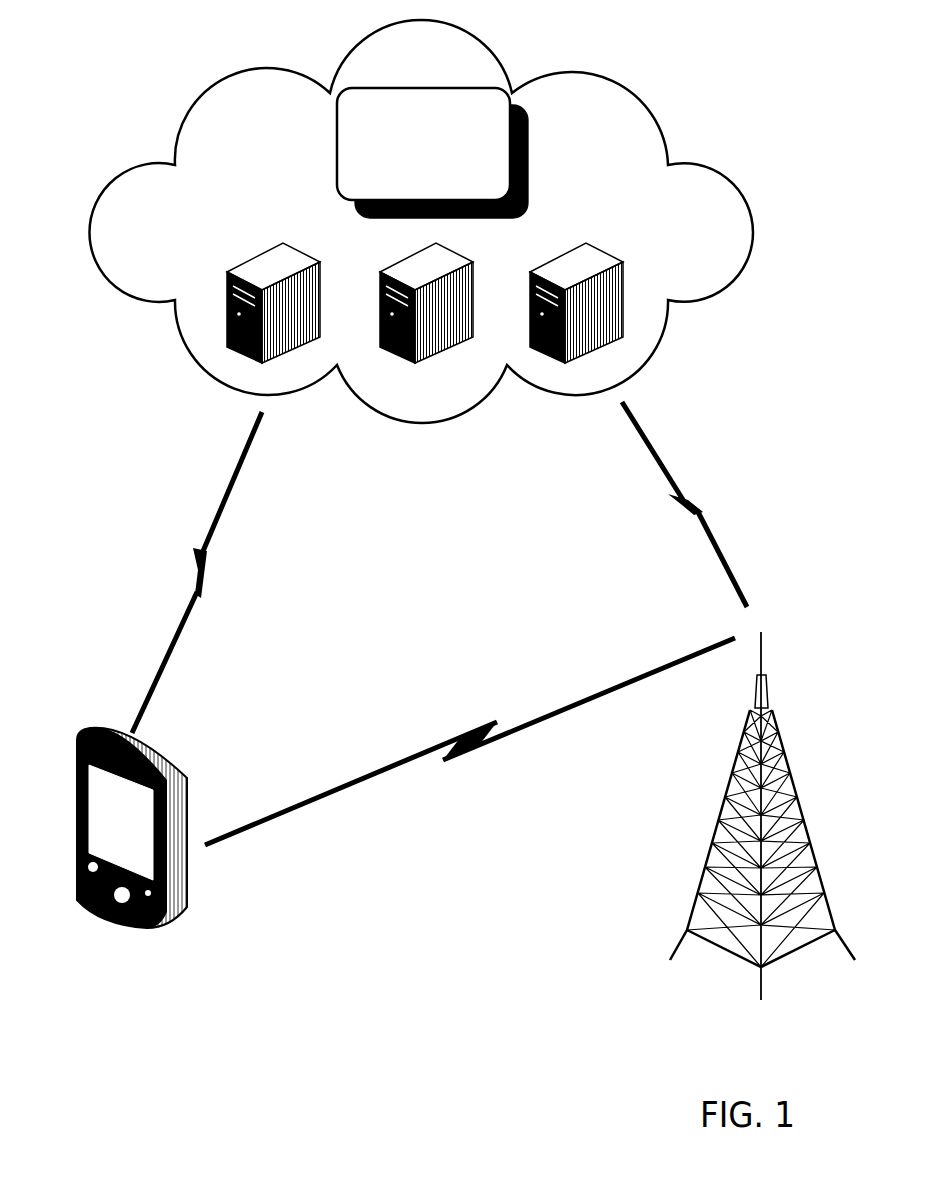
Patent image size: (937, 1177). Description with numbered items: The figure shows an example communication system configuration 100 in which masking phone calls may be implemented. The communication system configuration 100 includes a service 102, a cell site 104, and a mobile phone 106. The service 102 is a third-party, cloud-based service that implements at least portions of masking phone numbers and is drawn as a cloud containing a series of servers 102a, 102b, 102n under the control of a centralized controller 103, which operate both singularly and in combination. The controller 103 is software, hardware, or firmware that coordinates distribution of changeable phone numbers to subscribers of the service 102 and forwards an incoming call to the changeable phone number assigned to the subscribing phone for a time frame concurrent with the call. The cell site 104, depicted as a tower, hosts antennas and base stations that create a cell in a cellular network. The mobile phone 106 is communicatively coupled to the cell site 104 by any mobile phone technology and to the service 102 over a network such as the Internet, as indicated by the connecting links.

The communication system configuration 100 is at (76, 66).
The service 102 is at (421, 221).
The server 102a is at (273, 291).
The server 102b is at (426, 291).
The server 102n is at (576, 291).
The controller 103 is at (432, 153).
The cell site 104 is at (762, 801).
The mobile phone 106 is at (146, 827).